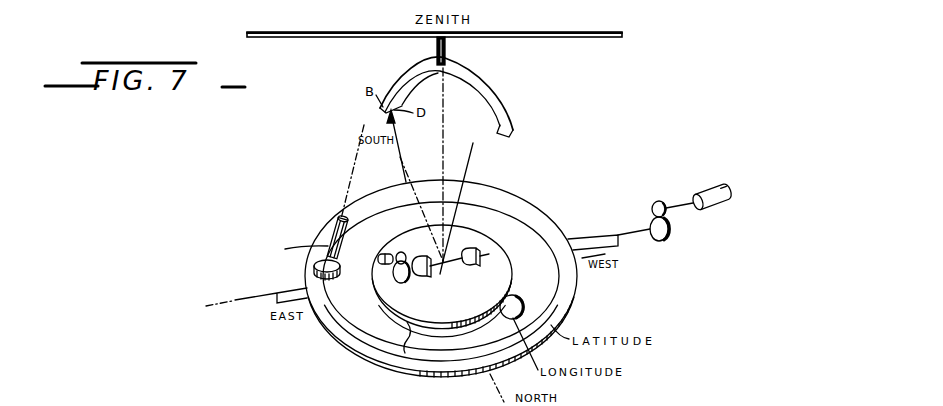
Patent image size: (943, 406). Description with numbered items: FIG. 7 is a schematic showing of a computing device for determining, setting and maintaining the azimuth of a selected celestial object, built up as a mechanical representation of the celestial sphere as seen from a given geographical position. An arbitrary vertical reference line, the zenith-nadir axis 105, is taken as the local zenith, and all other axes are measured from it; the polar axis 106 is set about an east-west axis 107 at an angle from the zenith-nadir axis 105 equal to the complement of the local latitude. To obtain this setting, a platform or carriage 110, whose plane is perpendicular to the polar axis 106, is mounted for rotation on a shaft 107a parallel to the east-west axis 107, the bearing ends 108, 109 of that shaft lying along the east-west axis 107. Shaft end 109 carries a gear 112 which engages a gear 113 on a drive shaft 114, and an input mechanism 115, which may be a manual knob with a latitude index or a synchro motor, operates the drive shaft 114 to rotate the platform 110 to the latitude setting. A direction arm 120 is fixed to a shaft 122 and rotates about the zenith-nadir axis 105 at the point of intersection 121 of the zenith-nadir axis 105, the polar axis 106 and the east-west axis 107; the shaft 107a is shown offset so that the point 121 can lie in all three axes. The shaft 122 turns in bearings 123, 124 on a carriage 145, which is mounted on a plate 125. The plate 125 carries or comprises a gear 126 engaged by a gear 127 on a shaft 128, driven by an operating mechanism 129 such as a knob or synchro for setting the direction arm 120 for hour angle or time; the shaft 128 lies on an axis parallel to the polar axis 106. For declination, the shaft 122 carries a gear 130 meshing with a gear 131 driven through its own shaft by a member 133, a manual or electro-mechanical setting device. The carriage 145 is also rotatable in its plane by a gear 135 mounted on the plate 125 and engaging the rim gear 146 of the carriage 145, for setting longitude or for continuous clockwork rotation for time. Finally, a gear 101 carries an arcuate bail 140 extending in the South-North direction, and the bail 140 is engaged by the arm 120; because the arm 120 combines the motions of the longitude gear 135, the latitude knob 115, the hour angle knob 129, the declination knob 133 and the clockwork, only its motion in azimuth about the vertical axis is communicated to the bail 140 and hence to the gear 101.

The gear 101 is at (613, 14).
The zenith-nadir axis 105 is at (468, 130).
The polar axis 106 is at (355, 173).
The east-west axis 107 is at (303, 287).
The shaft 107a is at (607, 257).
The bearing end 108 is at (256, 303).
The bearing end 109 is at (637, 222).
The platform or carriage 110 is at (370, 365).
The gear 112 is at (670, 230).
The gear 113 is at (658, 201).
The drive shaft 114 is at (681, 202).
The input mechanism 115 is at (720, 192).
The direction arm 120 is at (390, 121).
The point of intersection 121 is at (448, 277).
The shaft 122 is at (453, 263).
The bearing 123 is at (478, 250).
The bearing 124 is at (429, 245).
The plate 125 is at (488, 340).
The gear 126 is at (461, 345).
The gear 127 is at (327, 282).
The shaft 128 is at (292, 246).
The operating mechanism 129 is at (333, 233).
The gear 130 is at (400, 283).
The gear 131 is at (404, 252).
The member 133 is at (391, 252).
The gear 135 is at (517, 299).
The arcuate bail 140 is at (490, 95).
The carriage 145 is at (457, 316).
The rim gear 146 is at (418, 345).